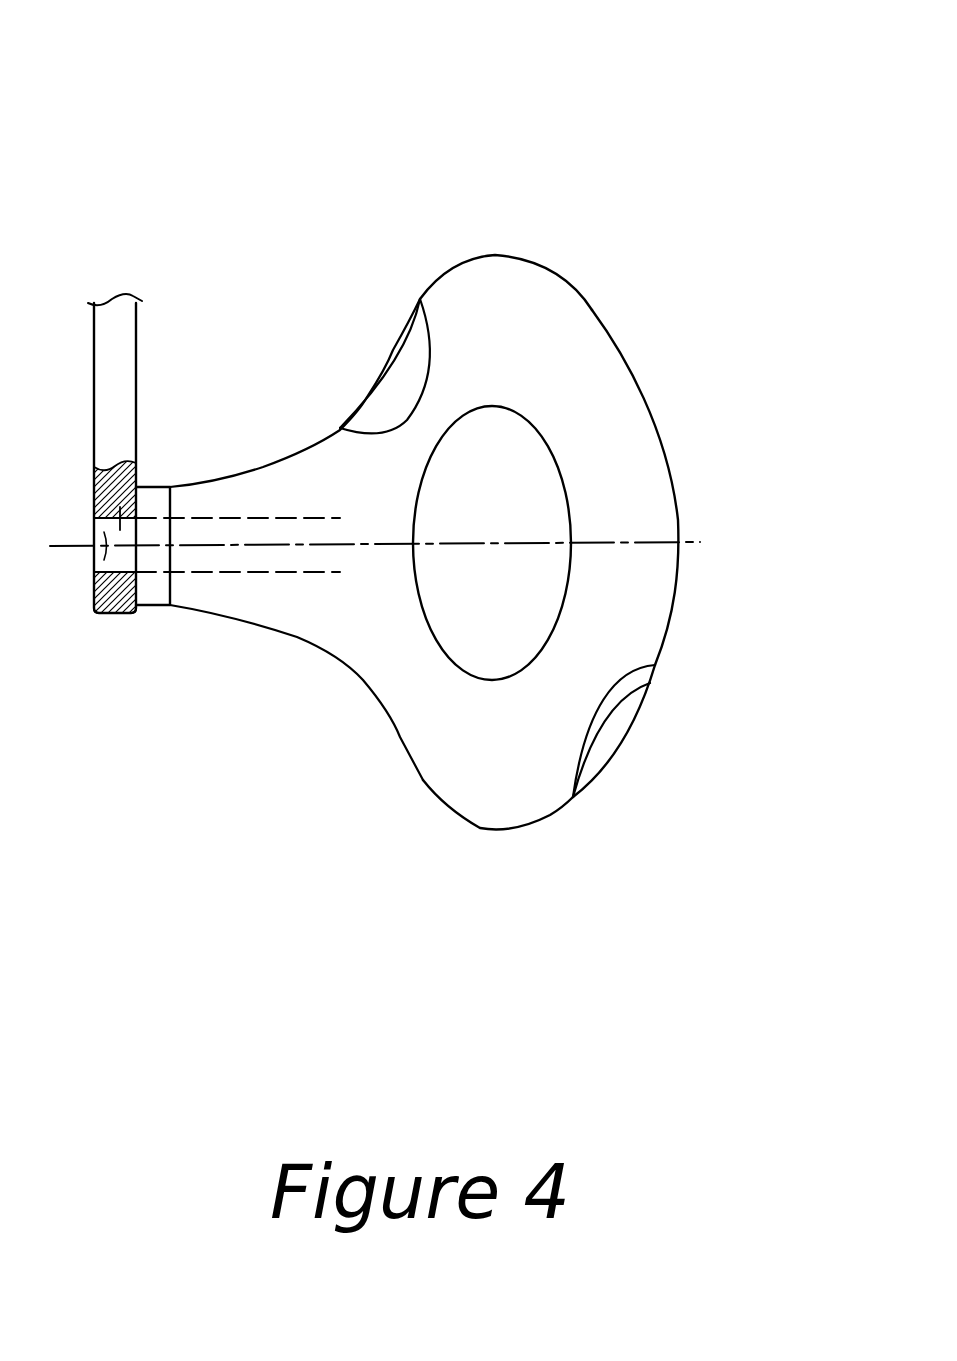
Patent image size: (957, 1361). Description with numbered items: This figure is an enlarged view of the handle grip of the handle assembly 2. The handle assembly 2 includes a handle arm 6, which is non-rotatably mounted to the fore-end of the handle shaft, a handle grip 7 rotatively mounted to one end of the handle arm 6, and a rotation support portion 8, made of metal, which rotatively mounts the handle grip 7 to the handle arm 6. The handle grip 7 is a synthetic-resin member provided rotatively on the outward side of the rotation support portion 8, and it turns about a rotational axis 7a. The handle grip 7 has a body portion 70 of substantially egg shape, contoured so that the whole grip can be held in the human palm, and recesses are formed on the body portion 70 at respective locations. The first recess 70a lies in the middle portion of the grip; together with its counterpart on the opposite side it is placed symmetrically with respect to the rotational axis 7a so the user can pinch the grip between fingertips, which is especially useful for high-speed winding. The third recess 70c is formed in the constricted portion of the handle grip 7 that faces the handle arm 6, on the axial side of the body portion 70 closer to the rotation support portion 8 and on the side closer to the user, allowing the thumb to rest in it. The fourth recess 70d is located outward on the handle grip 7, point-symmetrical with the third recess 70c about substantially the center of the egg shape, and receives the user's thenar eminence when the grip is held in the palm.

The handle assembly 2 is at (280, 175).
The handle arm 6 is at (142, 358).
The handle grip 7 is at (597, 306).
The rotational axis 7a is at (262, 540).
The rotation support portion 8 is at (138, 484).
The body portion 70 is at (614, 420).
The first recess 70a is at (458, 668).
The third recess 70c is at (380, 383).
The fourth recess 70d is at (620, 747).